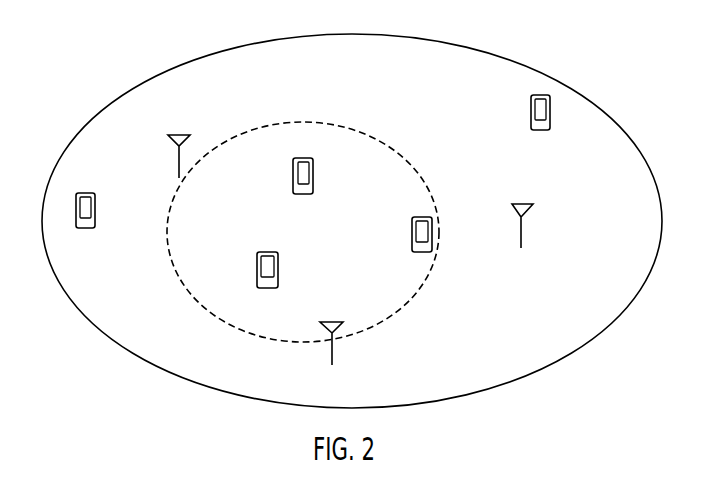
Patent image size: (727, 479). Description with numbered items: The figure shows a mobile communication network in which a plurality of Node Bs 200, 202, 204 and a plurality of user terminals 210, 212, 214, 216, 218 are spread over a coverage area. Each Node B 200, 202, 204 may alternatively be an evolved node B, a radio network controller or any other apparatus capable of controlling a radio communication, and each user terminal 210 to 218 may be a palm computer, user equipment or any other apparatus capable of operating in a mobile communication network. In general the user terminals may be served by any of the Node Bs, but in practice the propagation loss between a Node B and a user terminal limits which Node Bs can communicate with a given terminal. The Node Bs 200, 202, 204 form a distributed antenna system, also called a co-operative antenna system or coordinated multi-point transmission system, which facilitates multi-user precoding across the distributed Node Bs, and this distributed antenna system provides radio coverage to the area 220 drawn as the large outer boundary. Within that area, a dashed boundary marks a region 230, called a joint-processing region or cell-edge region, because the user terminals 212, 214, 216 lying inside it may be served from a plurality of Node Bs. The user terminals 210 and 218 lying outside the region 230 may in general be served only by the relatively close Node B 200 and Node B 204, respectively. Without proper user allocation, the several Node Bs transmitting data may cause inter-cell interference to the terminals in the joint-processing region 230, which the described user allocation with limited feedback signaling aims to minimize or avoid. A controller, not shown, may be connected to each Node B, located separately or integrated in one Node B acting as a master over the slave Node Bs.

The Node B 200 is at (179, 162).
The Node B 202 is at (332, 357).
The Node B 204 is at (521, 228).
The user terminal 210 is at (86, 228).
The user terminal 212 is at (266, 288).
The user terminal 214 is at (299, 194).
The user terminal 216 is at (420, 252).
The user terminal 218 is at (541, 130).
The area 220 is at (637, 148).
The joint-processing region 230 is at (417, 293).